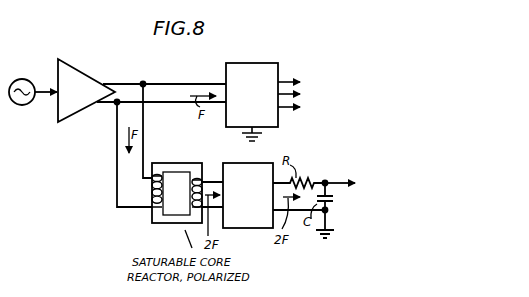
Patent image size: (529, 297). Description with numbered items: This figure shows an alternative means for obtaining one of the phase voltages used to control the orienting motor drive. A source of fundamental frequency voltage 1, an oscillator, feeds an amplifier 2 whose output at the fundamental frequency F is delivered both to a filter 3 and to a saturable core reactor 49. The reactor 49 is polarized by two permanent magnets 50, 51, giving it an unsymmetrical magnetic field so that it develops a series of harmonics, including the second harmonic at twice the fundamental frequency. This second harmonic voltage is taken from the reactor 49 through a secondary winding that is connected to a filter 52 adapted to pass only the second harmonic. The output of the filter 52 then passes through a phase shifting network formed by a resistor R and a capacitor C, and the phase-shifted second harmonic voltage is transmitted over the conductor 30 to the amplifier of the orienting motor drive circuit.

The source of fundamental frequency voltage 1 is at (30, 80).
The amplifier 2 is at (85, 80).
The filter 3 is at (272, 63).
The saturable core reactor 49 is at (171, 182).
The permanent magnet 50 is at (196, 167).
The permanent magnet 51 is at (162, 225).
The filter 52 is at (237, 165).
The conductor 30 is at (360, 152).